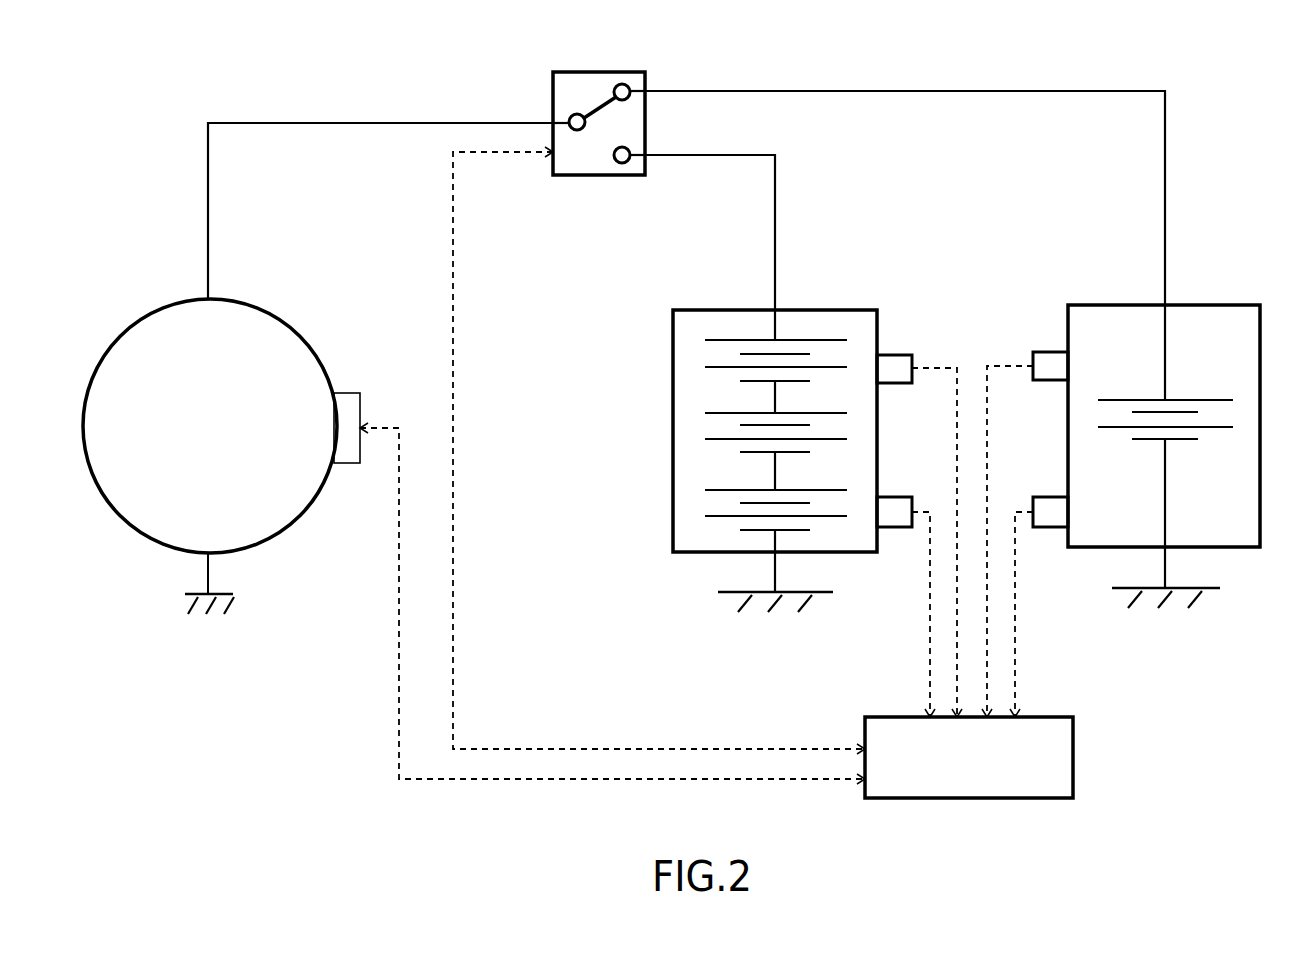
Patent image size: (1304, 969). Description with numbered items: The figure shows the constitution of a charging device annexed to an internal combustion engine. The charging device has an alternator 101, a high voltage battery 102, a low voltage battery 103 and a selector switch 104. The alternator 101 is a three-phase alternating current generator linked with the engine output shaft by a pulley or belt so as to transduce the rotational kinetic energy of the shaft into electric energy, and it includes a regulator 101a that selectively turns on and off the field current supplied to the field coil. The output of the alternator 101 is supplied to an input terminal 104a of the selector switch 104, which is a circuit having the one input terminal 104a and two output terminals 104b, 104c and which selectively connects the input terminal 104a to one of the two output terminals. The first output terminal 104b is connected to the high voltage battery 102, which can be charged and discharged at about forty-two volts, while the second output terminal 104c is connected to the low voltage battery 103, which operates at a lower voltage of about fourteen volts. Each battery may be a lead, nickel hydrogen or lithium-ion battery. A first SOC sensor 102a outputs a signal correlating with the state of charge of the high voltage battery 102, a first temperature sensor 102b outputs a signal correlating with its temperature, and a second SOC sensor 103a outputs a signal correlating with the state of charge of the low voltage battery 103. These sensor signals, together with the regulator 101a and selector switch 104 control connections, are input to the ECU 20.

The ECU 20 is at (1073, 760).
The alternator 101 is at (280, 298).
The regulator 101a is at (350, 393).
The high voltage battery 102 is at (802, 310).
The first SOC sensor 102a is at (900, 355).
The first temperature sensor 102b is at (900, 497).
The low voltage battery 103 is at (1243, 305).
The second SOC sensor 103a is at (1043, 352).
The selector switch 104 is at (583, 70).
The input terminal 104a is at (571, 116).
The first output terminal 104b is at (624, 147).
The second output terminal 104c is at (624, 84).